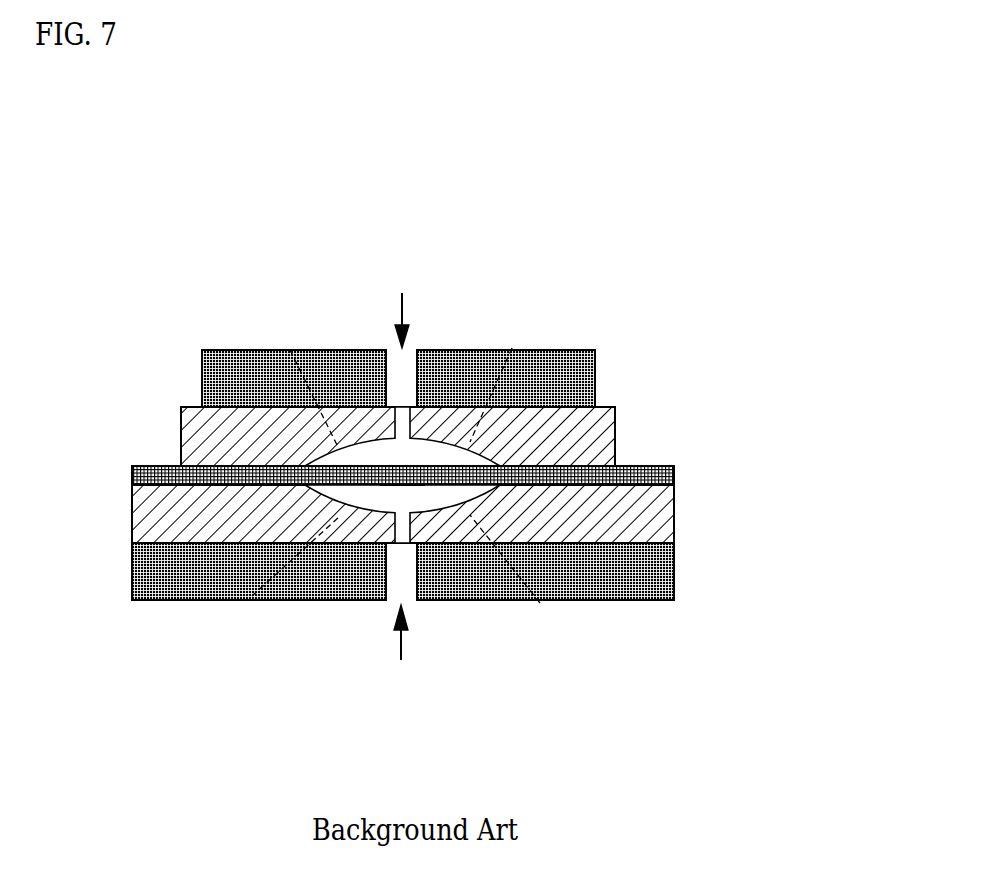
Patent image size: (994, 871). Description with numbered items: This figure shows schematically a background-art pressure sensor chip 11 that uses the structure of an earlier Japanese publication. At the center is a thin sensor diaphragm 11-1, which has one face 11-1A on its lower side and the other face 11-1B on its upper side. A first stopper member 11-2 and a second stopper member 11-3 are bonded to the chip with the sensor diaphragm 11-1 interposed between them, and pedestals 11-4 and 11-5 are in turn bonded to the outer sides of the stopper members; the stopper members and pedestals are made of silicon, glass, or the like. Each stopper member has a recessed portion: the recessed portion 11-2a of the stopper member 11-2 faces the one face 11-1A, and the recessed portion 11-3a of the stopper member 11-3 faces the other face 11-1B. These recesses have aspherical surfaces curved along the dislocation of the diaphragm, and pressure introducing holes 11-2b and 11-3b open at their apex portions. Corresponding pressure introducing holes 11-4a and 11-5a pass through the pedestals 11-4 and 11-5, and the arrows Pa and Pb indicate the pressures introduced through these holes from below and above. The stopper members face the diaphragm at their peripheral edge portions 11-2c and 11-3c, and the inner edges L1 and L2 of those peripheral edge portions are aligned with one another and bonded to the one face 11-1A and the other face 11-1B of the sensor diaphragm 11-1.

The pressure sensor chip 11 is at (596, 310).
The sensor diaphragm 11-1 is at (674, 472).
The one face of the sensor diaphragm 11-1A is at (475, 487).
The other face of the sensor diaphragm 11-1B is at (402, 460).
The first stopper member 11-2 is at (674, 521).
The recessed portion 11-2a is at (426, 512).
The pressure introducing hole 11-2b is at (352, 545).
The peripheral edge portion 11-2c is at (240, 545).
The second stopper member 11-3 is at (615, 415).
The recessed portion 11-3a is at (436, 452).
The pressure introducing hole 11-3b is at (338, 406).
The peripheral edge portion 11-3c is at (202, 405).
The pedestal 11-4 is at (132, 603).
The pressure introducing hole 11-4a is at (393, 606).
The pedestal 11-5 is at (598, 352).
The pressure introducing hole 11-5a is at (384, 398).
The inner edge of the peripheral edge portion L1 is at (252, 596).
The inner edge of the peripheral edge portion L2 is at (290, 350).
The pressure at lower port Pa is at (400, 649).
The pressure at upper port Pb is at (404, 300).